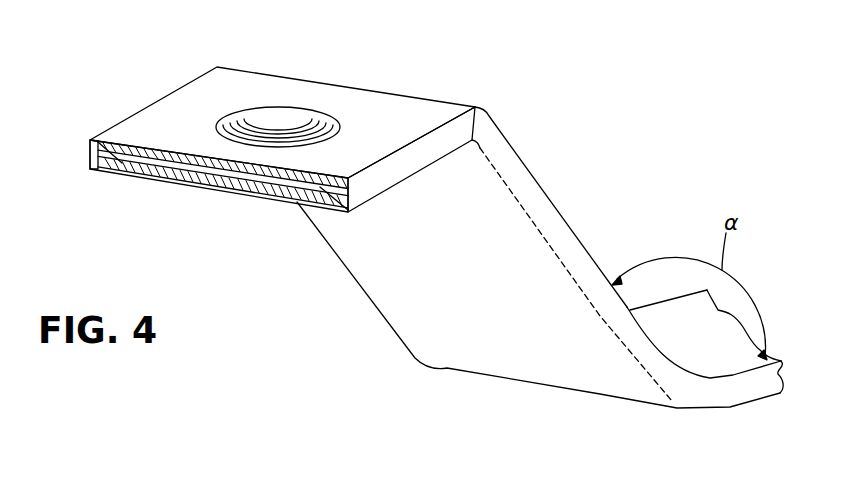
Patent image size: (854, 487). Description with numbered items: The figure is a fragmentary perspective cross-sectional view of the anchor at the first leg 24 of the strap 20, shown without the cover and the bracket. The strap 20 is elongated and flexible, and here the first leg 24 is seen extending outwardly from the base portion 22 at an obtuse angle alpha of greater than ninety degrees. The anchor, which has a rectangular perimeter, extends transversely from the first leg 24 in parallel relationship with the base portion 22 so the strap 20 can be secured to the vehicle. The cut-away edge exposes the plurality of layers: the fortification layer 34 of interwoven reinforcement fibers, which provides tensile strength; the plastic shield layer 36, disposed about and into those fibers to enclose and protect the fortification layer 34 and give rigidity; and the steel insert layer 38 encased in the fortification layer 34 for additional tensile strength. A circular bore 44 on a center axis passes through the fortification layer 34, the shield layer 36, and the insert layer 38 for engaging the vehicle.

The strap 20 is at (634, 221).
The base portion 22 is at (707, 352).
The first leg 24 is at (397, 304).
The fortification layer 34 is at (97, 167).
The shield layer 36 is at (90, 143).
The insert layer 38 is at (183, 184).
The bore 44 is at (272, 116).